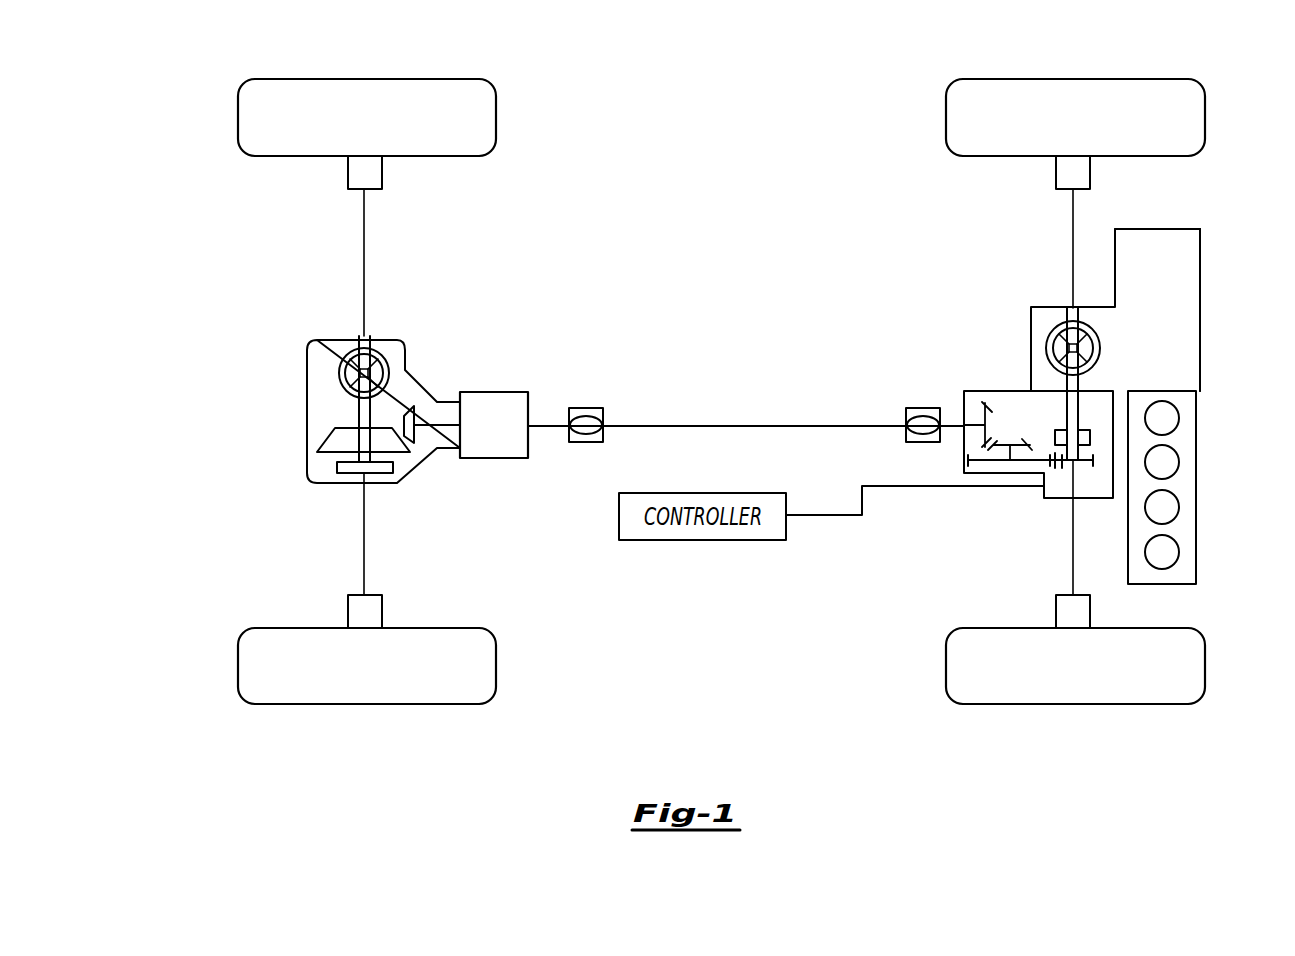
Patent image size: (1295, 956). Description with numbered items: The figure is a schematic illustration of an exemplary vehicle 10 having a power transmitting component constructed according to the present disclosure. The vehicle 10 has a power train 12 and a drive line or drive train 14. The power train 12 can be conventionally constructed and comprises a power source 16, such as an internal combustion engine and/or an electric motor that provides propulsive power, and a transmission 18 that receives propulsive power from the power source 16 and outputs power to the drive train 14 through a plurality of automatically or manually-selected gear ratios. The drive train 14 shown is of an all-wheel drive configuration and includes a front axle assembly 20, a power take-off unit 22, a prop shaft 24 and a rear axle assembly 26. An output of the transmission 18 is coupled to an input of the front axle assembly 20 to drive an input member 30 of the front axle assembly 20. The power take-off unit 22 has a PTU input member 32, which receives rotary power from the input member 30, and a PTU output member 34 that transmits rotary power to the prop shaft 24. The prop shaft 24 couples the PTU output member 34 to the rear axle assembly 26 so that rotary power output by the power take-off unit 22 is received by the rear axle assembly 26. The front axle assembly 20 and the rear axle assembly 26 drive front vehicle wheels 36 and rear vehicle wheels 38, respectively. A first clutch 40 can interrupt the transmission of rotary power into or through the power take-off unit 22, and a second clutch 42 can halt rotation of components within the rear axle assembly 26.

The vehicle 10 is at (186, 746).
The power train 12 is at (1089, 414).
The drive train 14 is at (765, 365).
The power source 16 is at (1190, 578).
The transmission 18 is at (1197, 238).
The front axle assembly 20 is at (1029, 290).
The power take-off unit 22 is at (973, 364).
The prop shaft 24 is at (650, 425).
The rear axle assembly 26 is at (288, 338).
The input member 30 is at (1100, 352).
The PTU input member 32 is at (1062, 463).
The PTU output member 34 is at (950, 425).
The front vehicle wheels 36 is at (946, 115).
The rear vehicle wheels 38 is at (238, 115).
The first clutch 40 is at (1090, 438).
The second clutch 42 is at (347, 474).